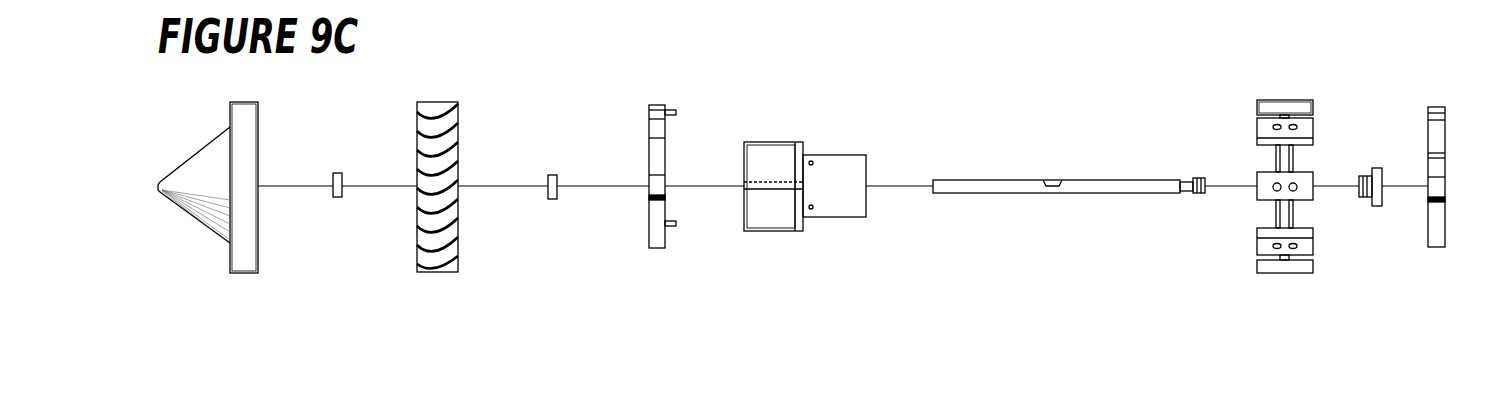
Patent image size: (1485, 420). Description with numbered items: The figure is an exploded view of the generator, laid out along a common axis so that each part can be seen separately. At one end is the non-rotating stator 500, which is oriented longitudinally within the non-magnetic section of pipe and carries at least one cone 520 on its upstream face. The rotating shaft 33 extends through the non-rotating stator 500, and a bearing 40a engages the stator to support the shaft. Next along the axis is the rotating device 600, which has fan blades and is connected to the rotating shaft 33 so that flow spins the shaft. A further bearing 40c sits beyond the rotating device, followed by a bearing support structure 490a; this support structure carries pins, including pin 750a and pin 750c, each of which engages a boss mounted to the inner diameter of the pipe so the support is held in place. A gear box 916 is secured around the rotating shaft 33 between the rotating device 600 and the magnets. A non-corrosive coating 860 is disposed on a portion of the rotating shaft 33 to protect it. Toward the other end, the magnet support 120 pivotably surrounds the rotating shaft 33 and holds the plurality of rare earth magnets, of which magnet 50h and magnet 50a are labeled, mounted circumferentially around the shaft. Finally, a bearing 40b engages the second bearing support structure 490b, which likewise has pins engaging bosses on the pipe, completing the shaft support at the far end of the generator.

The non-rotating stator 500 is at (246, 102).
The cone 520 is at (194, 155).
The bearing 40a is at (338, 173).
The rotating device 600 is at (432, 102).
The bearing 40c is at (553, 175).
The bearing support structure 490a is at (664, 182).
The pin 750a is at (680, 100).
The pin 750c is at (691, 241).
The gear box 916 is at (775, 142).
The non-corrosive coating 860 is at (1069, 171).
The rotating shaft 33 is at (1057, 180).
The magnet support 120 is at (1290, 199).
The rare earth magnet 50h is at (1286, 123).
The rare earth magnet 50a is at (1298, 196).
The bearing 40b is at (1376, 168).
The bearing support structure 490b is at (1435, 246).